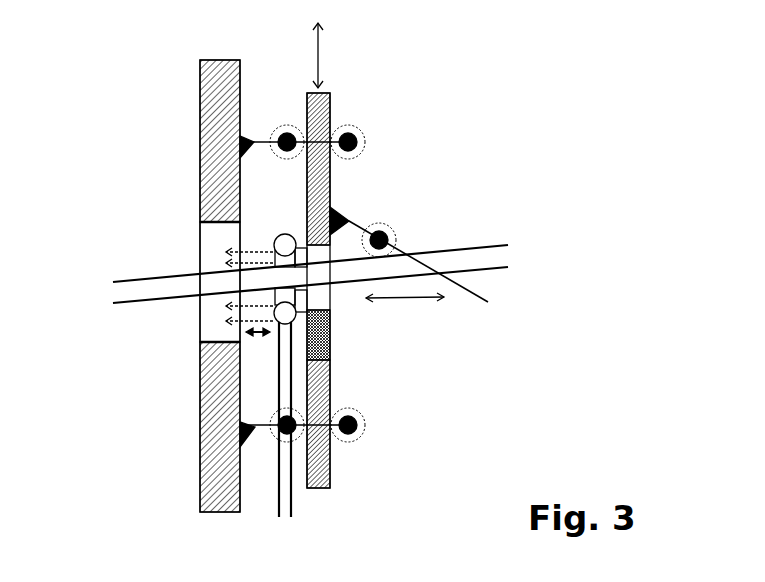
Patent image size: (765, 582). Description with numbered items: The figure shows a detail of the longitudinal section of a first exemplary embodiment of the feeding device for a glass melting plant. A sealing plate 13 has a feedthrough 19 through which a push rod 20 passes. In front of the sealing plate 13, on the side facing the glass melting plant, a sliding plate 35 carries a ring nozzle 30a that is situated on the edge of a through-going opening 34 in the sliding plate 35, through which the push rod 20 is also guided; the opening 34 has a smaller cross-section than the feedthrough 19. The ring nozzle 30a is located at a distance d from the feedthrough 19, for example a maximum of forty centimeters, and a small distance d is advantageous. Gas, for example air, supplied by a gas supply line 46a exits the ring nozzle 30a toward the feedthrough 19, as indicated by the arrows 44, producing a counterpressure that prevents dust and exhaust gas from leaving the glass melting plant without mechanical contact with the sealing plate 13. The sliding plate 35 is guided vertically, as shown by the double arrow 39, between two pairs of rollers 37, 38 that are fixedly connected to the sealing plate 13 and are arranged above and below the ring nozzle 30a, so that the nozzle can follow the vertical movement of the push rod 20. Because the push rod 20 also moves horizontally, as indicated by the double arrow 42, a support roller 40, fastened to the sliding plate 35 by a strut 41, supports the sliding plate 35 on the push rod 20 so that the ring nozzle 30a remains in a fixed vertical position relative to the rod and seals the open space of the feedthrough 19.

The sealing plate 13 is at (217, 127).
The feedthrough 19 is at (210, 222).
The push rod 20 is at (157, 292).
The ring nozzle 30a is at (285, 233).
The through-going opening 34 is at (317, 302).
The sliding plate 35 is at (320, 107).
The rollers 37 is at (280, 130).
The rollers 38 is at (362, 127).
The double arrow 39 is at (320, 43).
The support roller 40 is at (437, 274).
The strut 41 is at (363, 224).
The double arrow 42 is at (400, 302).
The arrows 44 is at (232, 327).
The gas supply line 46a is at (290, 502).
The distance d is at (262, 340).